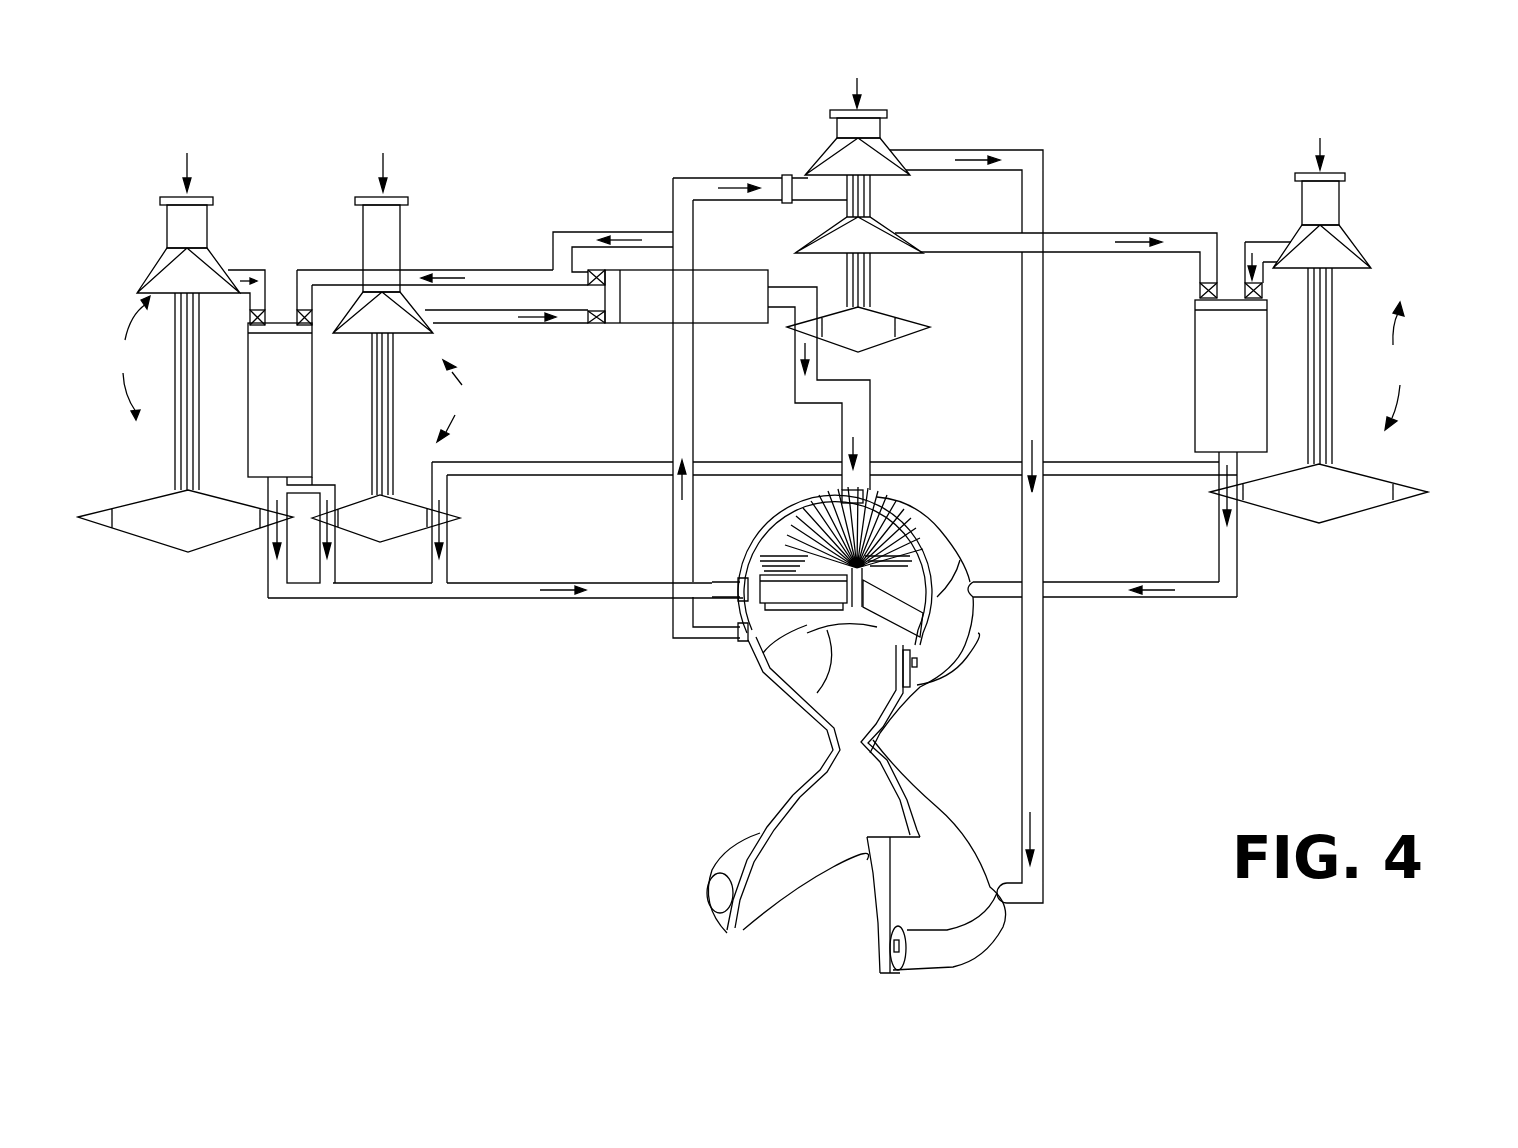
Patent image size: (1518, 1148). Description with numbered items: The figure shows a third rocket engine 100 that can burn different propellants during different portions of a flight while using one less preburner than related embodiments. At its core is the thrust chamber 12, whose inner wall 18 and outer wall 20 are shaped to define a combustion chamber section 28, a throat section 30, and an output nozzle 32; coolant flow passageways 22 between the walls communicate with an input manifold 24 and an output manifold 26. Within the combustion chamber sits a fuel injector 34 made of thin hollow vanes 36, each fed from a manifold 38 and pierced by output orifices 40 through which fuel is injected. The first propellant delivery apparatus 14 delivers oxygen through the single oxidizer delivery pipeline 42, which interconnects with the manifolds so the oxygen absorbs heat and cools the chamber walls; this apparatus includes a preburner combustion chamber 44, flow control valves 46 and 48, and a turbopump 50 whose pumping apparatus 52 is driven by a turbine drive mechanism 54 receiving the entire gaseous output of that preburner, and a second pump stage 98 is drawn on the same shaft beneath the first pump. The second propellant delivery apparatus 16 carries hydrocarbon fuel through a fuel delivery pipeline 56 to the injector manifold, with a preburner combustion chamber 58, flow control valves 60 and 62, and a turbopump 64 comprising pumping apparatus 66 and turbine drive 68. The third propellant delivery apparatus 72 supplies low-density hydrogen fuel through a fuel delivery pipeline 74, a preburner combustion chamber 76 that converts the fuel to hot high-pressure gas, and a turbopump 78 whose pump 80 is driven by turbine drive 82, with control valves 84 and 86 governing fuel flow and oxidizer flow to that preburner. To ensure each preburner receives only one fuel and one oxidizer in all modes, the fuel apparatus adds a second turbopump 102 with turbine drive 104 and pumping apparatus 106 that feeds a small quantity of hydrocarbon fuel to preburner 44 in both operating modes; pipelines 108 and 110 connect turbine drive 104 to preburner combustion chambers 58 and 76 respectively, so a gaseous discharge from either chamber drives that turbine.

The thrust chamber 12 is at (1013, 685).
The first propellant delivery apparatus 14 is at (1112, 72).
The second propellant delivery apparatus 16 is at (455, 60).
The inner wall 18 is at (897, 700).
The outer wall 20 is at (905, 712).
The coolant flow passageways 22 is at (902, 832).
The input manifold 24 is at (939, 855).
The output manifold 26 is at (747, 647).
The combustion chamber section 28 is at (790, 693).
The throat section 30 is at (850, 733).
The output nozzle 32 is at (813, 856).
The fuel injector 34 is at (808, 528).
The thin hollow vanes 36 is at (762, 562).
The manifold 38 is at (737, 572).
The output orifices 40 is at (841, 606).
The oxidizer delivery pipeline 42 is at (626, 233).
The preburner combustion chamber 44 is at (665, 324).
The flow control valve 46 is at (598, 270).
The flow control valve 48 is at (597, 326).
The turbopump 50 is at (770, 160).
The pumping apparatus 52 is at (888, 140).
The turbine drive mechanism 54 is at (893, 312).
The fuel delivery pipeline 56 is at (264, 268).
The preburner combustion chamber 58 is at (248, 400).
The flow control valve 60 is at (253, 322).
The flow control valve 62 is at (297, 309).
The turbopump 64 is at (153, 391).
The pumping apparatus 66 is at (152, 265).
The turbine drive 68 is at (150, 490).
The third propellant delivery apparatus 72 is at (1510, 173).
The fuel delivery pipeline 74 is at (1267, 243).
The preburner combustion chamber 76 is at (1193, 372).
The turbopump 78 is at (1362, 366).
The pump 80 is at (1354, 239).
The turbine drive 82 is at (1362, 465).
The control valve 84 is at (1198, 290).
The control valve 86 is at (1264, 290).
The second oxidizer pump 98 is at (903, 223).
The third rocket engine 100 is at (1305, 721).
The second turbopump 102 is at (423, 414).
The turbine drive 104 is at (386, 543).
The pumping apparatus 106 is at (403, 334).
The pipeline 108 is at (327, 563).
The pipeline 110 is at (525, 462).